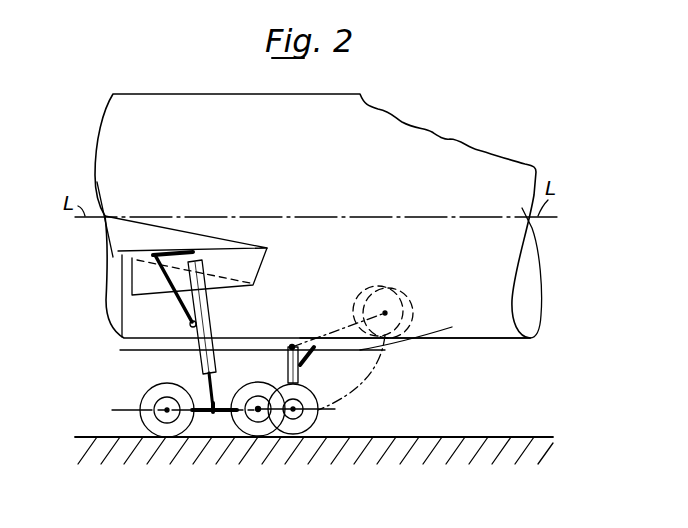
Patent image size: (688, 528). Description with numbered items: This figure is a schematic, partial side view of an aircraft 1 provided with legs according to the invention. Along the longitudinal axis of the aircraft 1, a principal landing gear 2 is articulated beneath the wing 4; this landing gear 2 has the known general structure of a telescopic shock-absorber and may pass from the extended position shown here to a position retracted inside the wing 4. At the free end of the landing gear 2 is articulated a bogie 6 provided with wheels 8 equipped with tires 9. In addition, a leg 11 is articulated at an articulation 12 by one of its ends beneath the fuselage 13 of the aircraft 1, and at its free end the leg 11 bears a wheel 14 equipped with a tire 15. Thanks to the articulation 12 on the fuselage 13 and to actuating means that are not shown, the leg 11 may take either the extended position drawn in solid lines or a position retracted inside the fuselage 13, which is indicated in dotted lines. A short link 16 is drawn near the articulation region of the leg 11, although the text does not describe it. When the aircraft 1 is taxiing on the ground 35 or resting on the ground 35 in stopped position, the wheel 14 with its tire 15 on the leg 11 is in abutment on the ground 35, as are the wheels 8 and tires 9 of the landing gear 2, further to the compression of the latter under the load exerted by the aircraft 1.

The aircraft 1 is at (166, 86).
The landing gear 2 is at (210, 314).
The wing 4 is at (123, 238).
The bogie 6 is at (204, 390).
The wheel 8 is at (258, 482).
The tire 9 is at (153, 392).
The leg 11 is at (303, 368).
The articulation 12 is at (292, 346).
The fuselage 13 is at (480, 328).
The wheel 14 is at (293, 412).
The tire 15 is at (316, 420).
The pivot joint 16 is at (288, 372).
The ground 35 is at (423, 437).